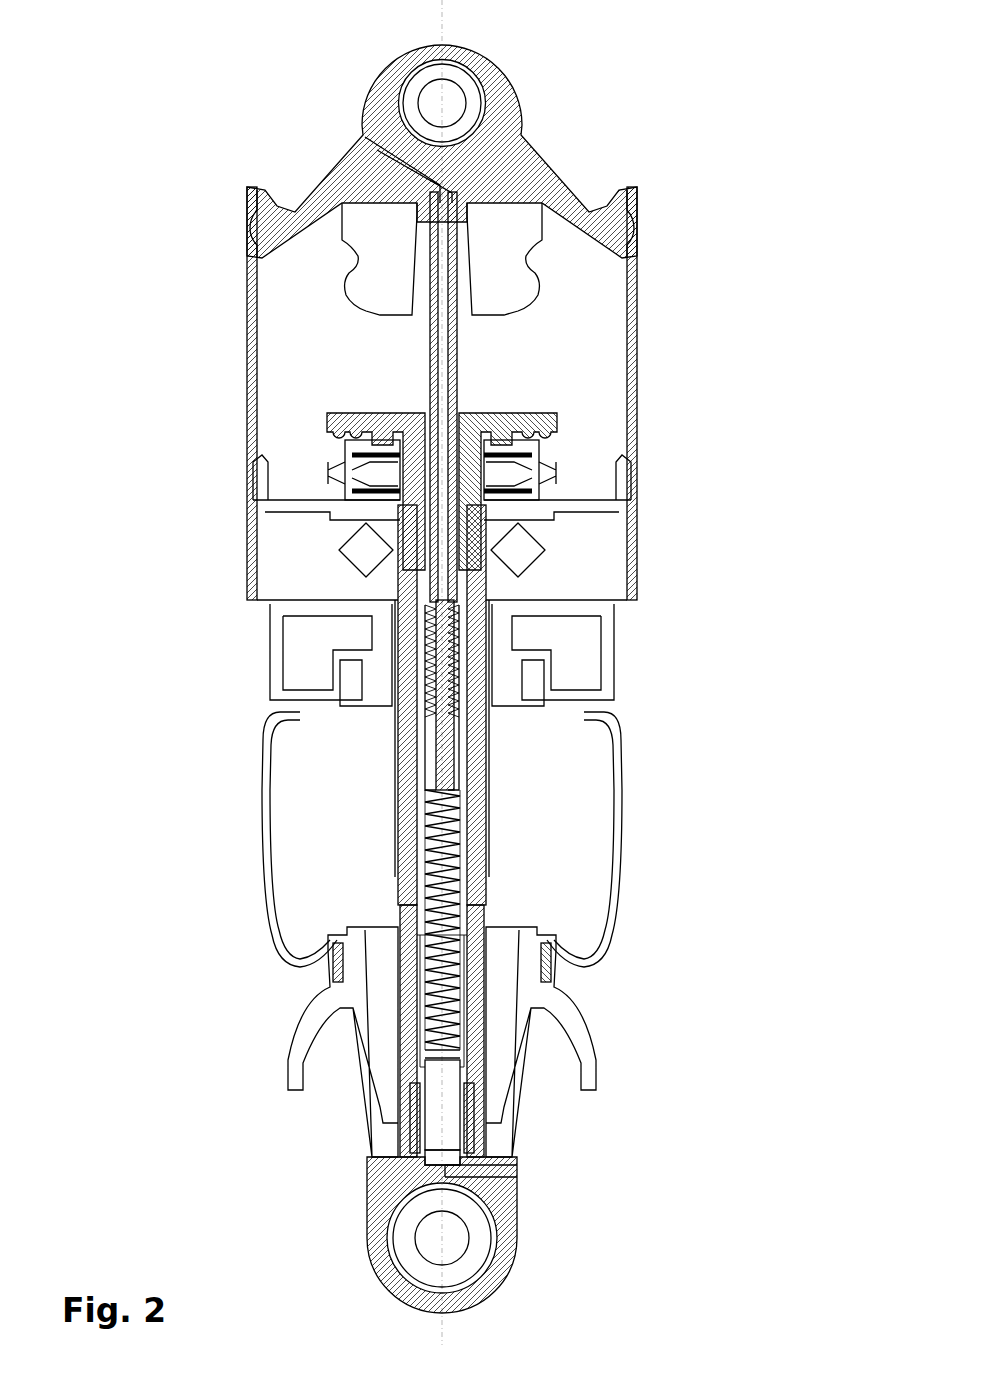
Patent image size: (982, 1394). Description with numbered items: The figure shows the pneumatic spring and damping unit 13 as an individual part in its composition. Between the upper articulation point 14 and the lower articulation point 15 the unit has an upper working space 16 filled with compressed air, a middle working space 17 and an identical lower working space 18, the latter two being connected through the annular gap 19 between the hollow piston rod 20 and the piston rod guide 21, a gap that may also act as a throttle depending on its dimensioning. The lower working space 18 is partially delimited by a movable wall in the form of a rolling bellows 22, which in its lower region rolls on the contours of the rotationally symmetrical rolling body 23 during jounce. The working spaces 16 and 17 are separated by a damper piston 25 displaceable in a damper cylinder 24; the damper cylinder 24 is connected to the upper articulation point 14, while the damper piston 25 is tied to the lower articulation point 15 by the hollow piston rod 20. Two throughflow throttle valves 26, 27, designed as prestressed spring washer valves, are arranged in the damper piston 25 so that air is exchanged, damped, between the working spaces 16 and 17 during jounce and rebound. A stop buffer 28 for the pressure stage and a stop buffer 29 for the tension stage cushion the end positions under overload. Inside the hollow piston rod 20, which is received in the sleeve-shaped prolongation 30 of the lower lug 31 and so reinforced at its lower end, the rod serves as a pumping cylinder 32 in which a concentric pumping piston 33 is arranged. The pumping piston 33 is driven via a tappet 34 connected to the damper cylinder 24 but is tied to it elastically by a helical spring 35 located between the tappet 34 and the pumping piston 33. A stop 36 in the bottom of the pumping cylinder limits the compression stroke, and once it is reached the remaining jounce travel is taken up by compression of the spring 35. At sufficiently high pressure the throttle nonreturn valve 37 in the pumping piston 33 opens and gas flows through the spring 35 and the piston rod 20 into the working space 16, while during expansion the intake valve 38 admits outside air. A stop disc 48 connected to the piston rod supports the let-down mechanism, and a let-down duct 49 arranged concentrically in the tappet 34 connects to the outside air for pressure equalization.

The pneumatic spring and damping unit 13 is at (206, 99).
The upper articulation point 14 is at (442, 103).
The lower articulation point 15 is at (442, 1237).
The upper working space 16 is at (535, 335).
The middle working space 17 is at (570, 538).
The lower working space 18 is at (537, 810).
The annular gap 19 is at (397, 628).
The hollow piston rod 20 is at (410, 897).
The piston rod guide 21 is at (378, 690).
The rolling bellows 22 is at (262, 781).
The rolling body 23 is at (314, 1013).
The damper cylinder 24 is at (253, 307).
The damper piston 25 is at (298, 459).
The throughflow throttle valve 26 is at (562, 445).
The throughflow throttle valve 27 is at (346, 490).
The stop buffer for the pressure stage 28 is at (378, 268).
The stop buffer for the tension stage 29 is at (518, 550).
The sleeve-shaped prolongation 30 is at (417, 1102).
The lower lug 31 is at (385, 1200).
The pumping cylinder 32 is at (438, 1117).
The pumping piston 33 is at (472, 1050).
The tappet 34 is at (434, 357).
The helical spring 35 is at (442, 858).
The stop 36 is at (455, 1138).
The throttle nonreturn valve 37 is at (446, 1080).
The intake valve 38 is at (436, 1156).
The stop disc 48 is at (518, 423).
The let-down duct 49 is at (442, 268).